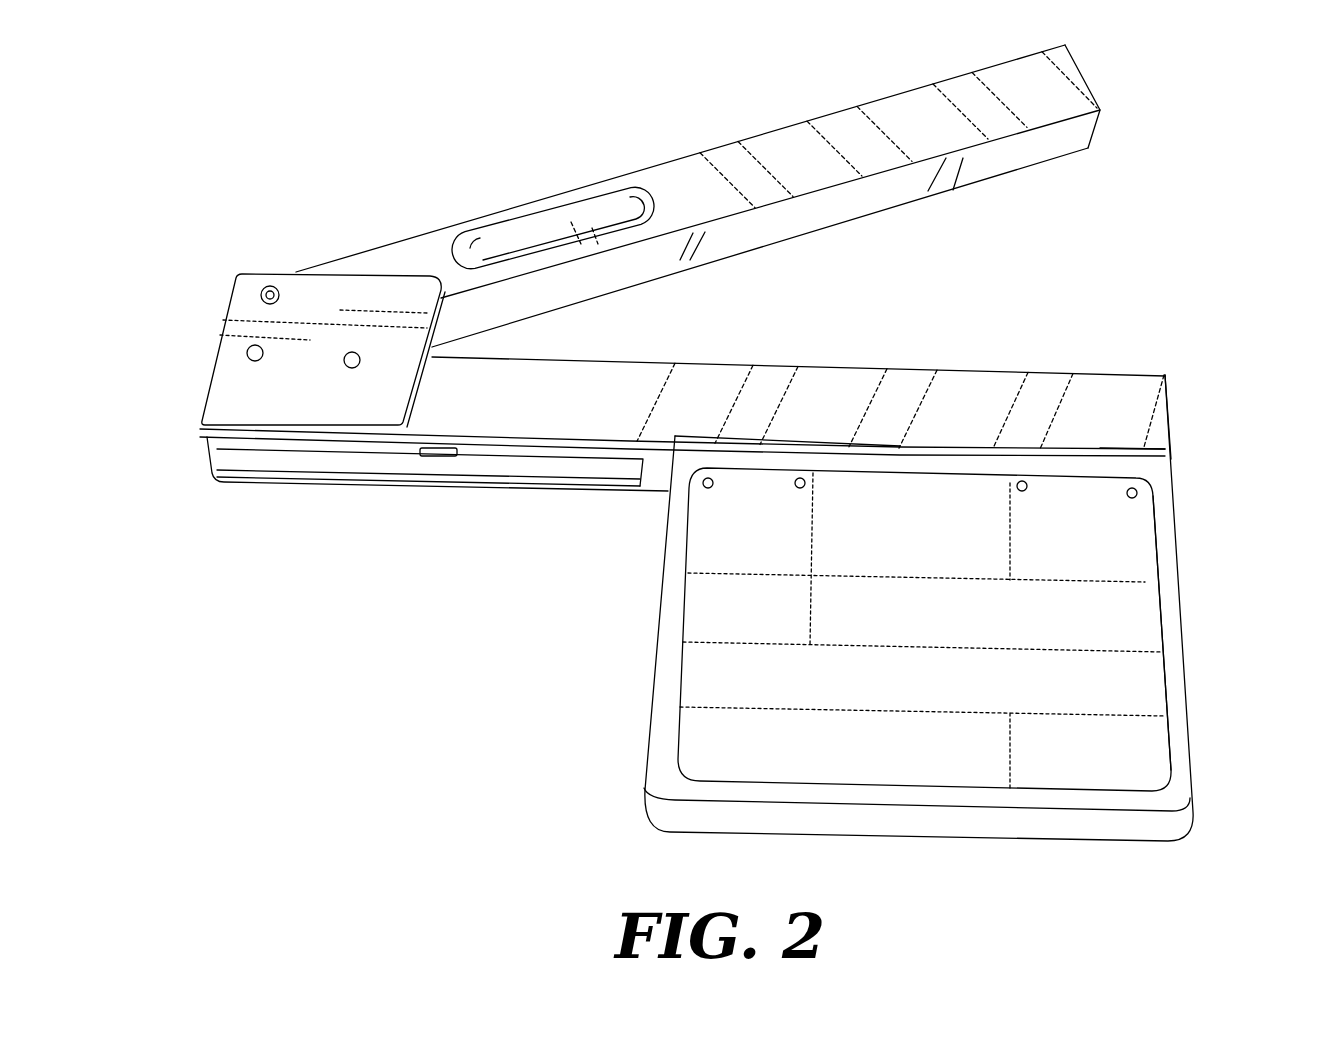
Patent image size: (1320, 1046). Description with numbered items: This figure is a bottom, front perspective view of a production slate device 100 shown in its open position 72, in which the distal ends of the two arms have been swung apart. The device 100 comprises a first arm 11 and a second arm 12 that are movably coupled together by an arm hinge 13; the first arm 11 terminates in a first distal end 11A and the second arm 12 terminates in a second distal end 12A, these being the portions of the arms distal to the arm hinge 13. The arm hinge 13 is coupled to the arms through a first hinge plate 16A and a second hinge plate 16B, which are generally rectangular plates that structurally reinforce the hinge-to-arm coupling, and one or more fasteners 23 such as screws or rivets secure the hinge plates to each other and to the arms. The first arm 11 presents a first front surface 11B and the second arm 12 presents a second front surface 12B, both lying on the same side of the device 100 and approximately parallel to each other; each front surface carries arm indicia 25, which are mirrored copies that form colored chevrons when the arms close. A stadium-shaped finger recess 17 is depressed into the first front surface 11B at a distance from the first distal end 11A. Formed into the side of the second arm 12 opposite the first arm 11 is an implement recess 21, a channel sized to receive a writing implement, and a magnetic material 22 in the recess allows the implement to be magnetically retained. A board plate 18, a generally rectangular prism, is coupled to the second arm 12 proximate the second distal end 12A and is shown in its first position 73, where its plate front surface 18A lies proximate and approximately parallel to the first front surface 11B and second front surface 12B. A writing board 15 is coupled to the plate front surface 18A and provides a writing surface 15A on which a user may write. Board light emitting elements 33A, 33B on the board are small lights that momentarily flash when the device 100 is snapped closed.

The production slate device 100 is at (410, 118).
The first arm 11 is at (752, 230).
The first distal end 11A is at (1099, 108).
The first front surface 11B is at (862, 138).
The second arm 12 is at (656, 458).
The second distal end 12A is at (1167, 405).
The second front surface 12B is at (606, 388).
The arm hinge 13 is at (264, 286).
The writing board 15 is at (730, 673).
The writing surface 15A is at (1136, 637).
The first hinge plate 16A is at (338, 300).
The second hinge plate 16B is at (443, 345).
The finger recess 17 is at (529, 243).
The board plate 18 is at (673, 812).
The plate front surface 18A is at (1152, 476).
The implement recess 21 is at (266, 452).
The magnetic material 22 is at (443, 458).
The fastener 23 is at (260, 360).
The arm indicia 25 is at (785, 152).
The board light emitting element 33A is at (803, 490).
The board light emitting element 33B is at (1025, 492).
The open position 72 is at (1160, 252).
The first position 73 is at (908, 608).